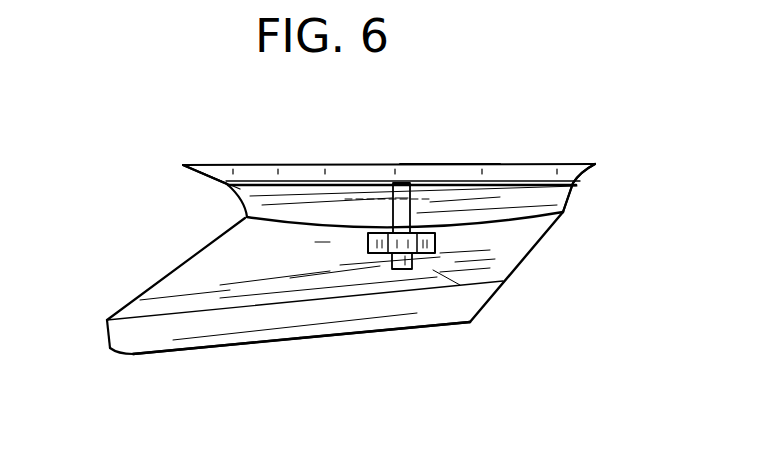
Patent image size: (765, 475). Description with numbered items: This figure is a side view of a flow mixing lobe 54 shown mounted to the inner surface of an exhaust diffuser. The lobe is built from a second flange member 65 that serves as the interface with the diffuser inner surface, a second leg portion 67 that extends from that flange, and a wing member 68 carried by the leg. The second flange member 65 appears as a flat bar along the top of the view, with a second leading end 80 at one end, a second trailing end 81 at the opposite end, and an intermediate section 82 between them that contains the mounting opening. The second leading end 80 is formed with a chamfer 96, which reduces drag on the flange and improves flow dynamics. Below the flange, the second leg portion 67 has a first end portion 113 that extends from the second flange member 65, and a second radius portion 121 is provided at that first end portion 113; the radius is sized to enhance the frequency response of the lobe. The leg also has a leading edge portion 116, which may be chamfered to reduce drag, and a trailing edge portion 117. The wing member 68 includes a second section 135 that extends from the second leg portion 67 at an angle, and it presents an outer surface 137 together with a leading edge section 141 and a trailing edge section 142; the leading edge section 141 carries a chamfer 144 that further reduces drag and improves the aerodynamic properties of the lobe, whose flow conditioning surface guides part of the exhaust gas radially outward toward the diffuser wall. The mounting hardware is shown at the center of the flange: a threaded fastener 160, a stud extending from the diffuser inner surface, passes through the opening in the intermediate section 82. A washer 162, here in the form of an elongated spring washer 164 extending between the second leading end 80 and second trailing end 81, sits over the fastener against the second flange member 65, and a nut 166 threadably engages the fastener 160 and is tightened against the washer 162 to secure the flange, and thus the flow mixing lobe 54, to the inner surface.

The flow mixing lobe 54 is at (113, 303).
The second flange member 65 is at (300, 148).
The second leg portion 67 is at (272, 228).
The wing member 68 is at (384, 341).
The second leading end 80 is at (183, 164).
The second trailing end 81 is at (592, 165).
The intermediate section 82 is at (447, 164).
The chamfer 96 is at (226, 184).
The first end portion 113 is at (433, 270).
The leading edge portion 116 is at (172, 278).
The trailing edge portion 117 is at (541, 228).
The second radius portion 121 is at (243, 221).
The second section 135 is at (178, 358).
The outer surface 137 is at (270, 327).
The leading edge section 141 is at (103, 349).
The trailing edge section 142 is at (505, 283).
The chamfer 144 is at (132, 357).
The fastener 160 is at (388, 212).
The washer 162 is at (478, 230).
The elongated spring washer 164 is at (525, 203).
The nut 166 is at (366, 240).